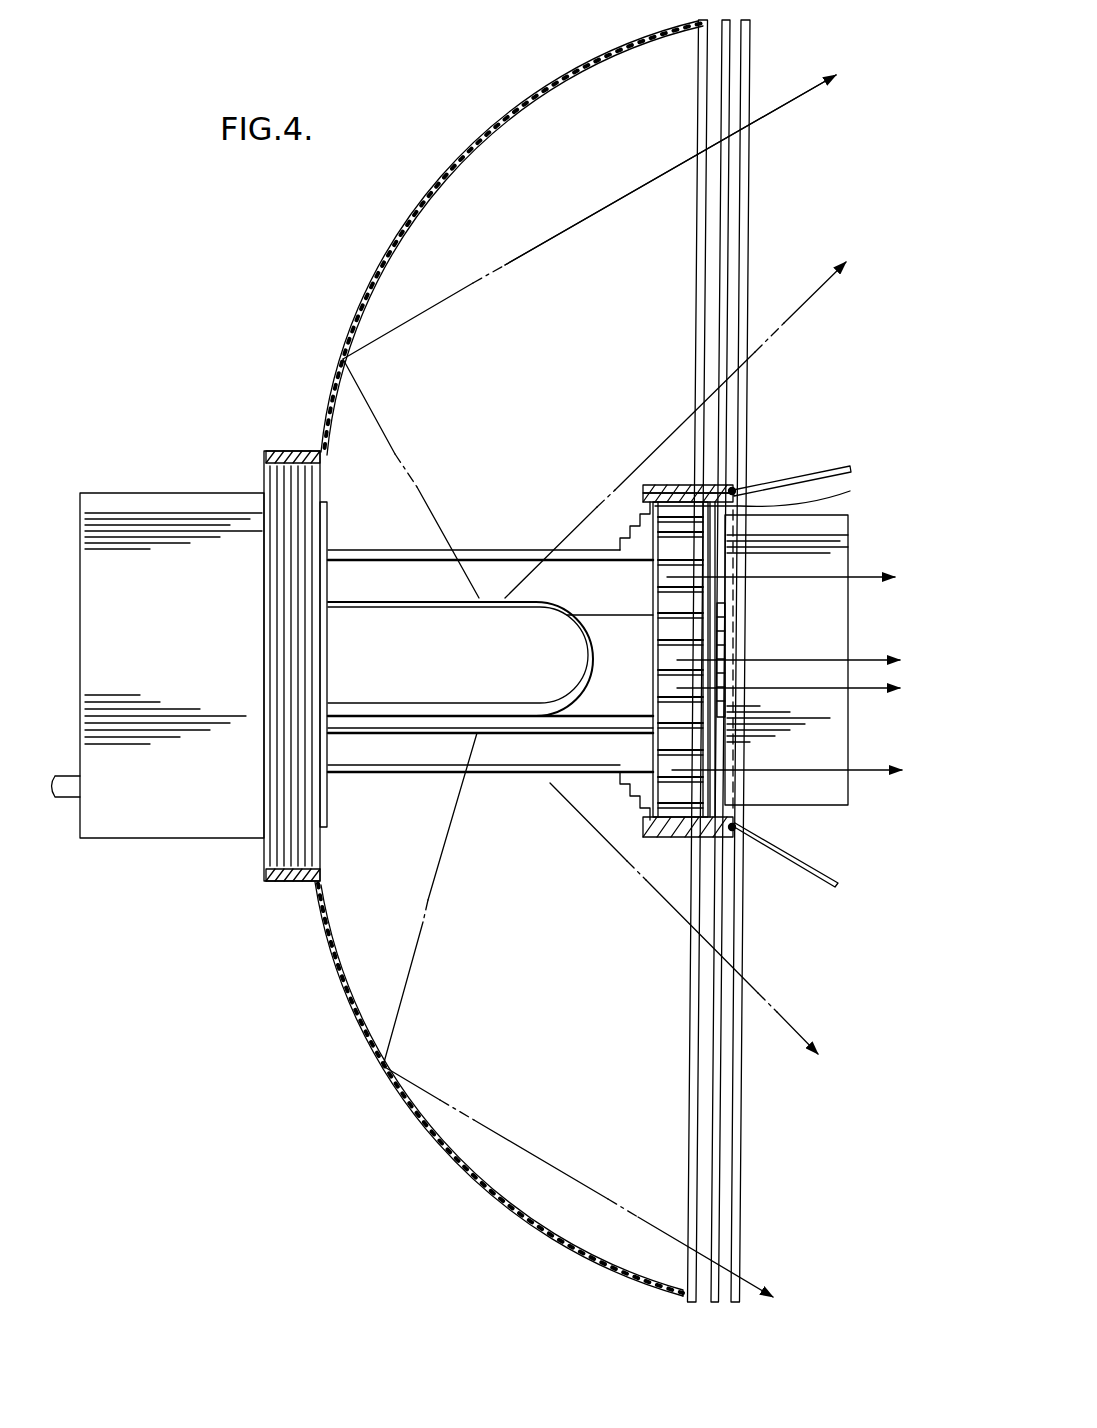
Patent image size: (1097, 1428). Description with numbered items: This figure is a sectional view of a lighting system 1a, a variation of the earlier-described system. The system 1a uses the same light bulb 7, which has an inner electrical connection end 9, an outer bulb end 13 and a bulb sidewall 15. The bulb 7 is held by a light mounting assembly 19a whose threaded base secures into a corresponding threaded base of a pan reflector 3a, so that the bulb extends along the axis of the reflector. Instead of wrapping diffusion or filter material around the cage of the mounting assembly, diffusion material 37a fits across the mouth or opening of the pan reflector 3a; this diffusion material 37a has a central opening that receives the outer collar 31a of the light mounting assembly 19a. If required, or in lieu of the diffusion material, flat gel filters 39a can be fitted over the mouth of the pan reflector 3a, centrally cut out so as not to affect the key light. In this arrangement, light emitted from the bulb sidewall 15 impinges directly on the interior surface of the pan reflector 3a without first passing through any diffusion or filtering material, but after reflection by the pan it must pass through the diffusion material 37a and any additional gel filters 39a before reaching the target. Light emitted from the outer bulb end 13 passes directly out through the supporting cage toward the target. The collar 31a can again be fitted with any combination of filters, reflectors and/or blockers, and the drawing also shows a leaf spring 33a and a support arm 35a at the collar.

The lighting system 1a is at (495, 661).
The pan reflector 3a is at (509, 658).
The light bulb 7 is at (490, 799).
The inner electrical connection end 9 is at (158, 703).
The outer bulb end 13 is at (490, 659).
The bulb sidewall 15 is at (458, 593).
The light mounting assembly 19a is at (490, 692).
The outer collar 31a is at (722, 628).
The leaf spring 33a is at (796, 493).
The support arm 35a is at (803, 645).
The diffusion material 37a is at (658, 661).
The flat gel filters 39a is at (790, 661).